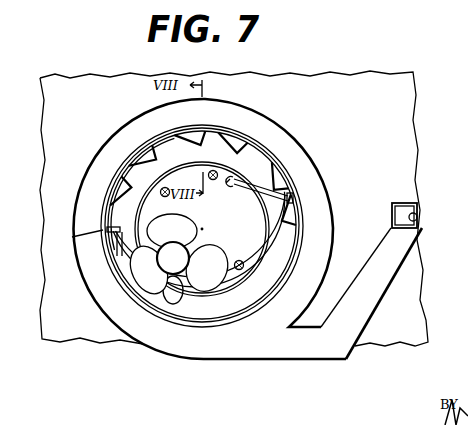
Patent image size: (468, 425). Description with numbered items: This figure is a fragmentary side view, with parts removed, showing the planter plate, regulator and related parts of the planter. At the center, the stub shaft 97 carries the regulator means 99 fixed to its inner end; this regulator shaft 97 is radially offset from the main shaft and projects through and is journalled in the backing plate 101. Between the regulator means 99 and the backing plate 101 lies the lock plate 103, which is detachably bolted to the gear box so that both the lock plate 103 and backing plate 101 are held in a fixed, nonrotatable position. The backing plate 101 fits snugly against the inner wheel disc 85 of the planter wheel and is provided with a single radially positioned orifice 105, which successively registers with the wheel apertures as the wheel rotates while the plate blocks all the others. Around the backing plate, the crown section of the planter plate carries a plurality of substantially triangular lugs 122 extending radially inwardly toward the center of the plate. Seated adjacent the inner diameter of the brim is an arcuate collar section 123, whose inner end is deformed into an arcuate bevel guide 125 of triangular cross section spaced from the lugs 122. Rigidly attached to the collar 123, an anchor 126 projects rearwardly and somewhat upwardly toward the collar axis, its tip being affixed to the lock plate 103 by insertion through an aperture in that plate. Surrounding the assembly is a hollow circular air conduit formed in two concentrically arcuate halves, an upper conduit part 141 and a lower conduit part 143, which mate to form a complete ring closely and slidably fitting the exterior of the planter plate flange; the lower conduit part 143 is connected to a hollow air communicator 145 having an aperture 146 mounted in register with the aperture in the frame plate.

The inner wheel disc 85 is at (319, 82).
The stub shaft 97 is at (173, 256).
The regulator means 99 is at (203, 268).
The backing plate 101 is at (133, 177).
The lock plate 103 is at (246, 233).
The orifice 105 is at (251, 153).
The lugs 122 is at (147, 152).
The collar section 123 is at (257, 313).
The bevel guide 125 is at (222, 315).
The anchor 126 is at (243, 195).
The upper conduit part 141 is at (282, 137).
The lower conduit part 143 is at (165, 339).
The air communicator 145 is at (356, 320).
The aperture 146 is at (415, 217).